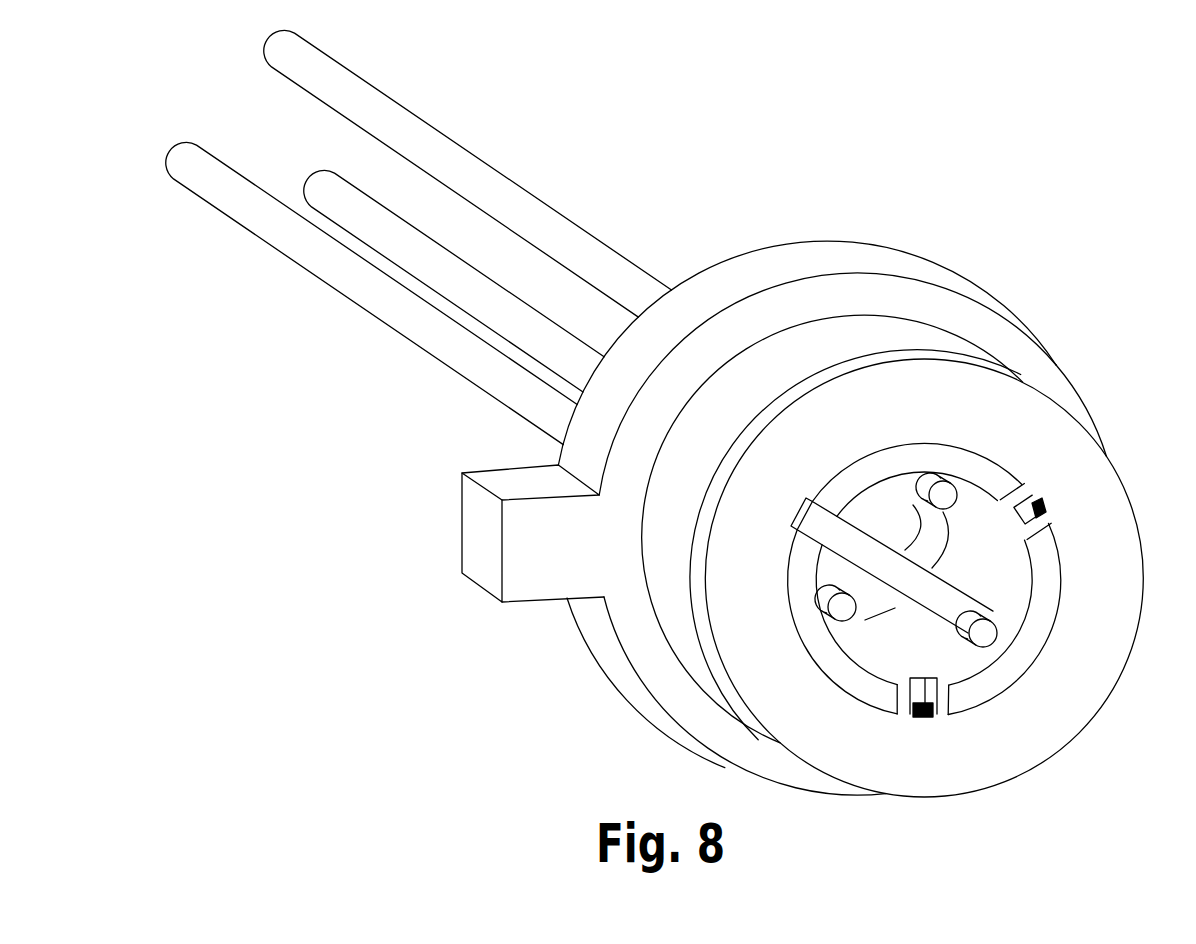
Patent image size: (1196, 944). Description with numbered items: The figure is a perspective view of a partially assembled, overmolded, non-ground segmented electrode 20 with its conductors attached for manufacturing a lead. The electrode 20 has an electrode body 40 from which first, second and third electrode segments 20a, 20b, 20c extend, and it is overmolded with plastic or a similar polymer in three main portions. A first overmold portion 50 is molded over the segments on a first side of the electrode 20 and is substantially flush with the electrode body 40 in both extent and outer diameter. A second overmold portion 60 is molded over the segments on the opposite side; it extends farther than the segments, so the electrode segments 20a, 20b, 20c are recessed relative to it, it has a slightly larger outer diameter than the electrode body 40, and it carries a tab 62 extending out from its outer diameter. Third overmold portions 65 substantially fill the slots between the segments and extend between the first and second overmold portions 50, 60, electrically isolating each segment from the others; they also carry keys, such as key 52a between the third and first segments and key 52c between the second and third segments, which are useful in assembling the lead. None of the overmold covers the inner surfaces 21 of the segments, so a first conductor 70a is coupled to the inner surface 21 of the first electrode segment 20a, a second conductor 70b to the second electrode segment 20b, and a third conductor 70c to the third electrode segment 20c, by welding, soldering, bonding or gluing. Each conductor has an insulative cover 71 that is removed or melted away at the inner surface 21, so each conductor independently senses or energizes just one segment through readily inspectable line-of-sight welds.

The non-ground electrode 20 is at (1074, 352).
The first electrode segment 20a is at (923, 450).
The second electrode segment 20b is at (820, 652).
The third electrode segment 20c is at (1022, 648).
The inner surface 21 is at (1003, 590).
The electrode body 40 is at (872, 335).
The first overmold portion 50 is at (1103, 477).
The key 52a is at (1047, 528).
The key 52c is at (920, 722).
The second overmold portion 60 is at (782, 253).
The tab 62 is at (472, 523).
The third overmold portions 65 is at (983, 510).
The first conductor 70a is at (399, 107).
The second conductor 70b is at (300, 266).
The third conductor 70c is at (347, 187).
The insulative cover 71 is at (963, 602).